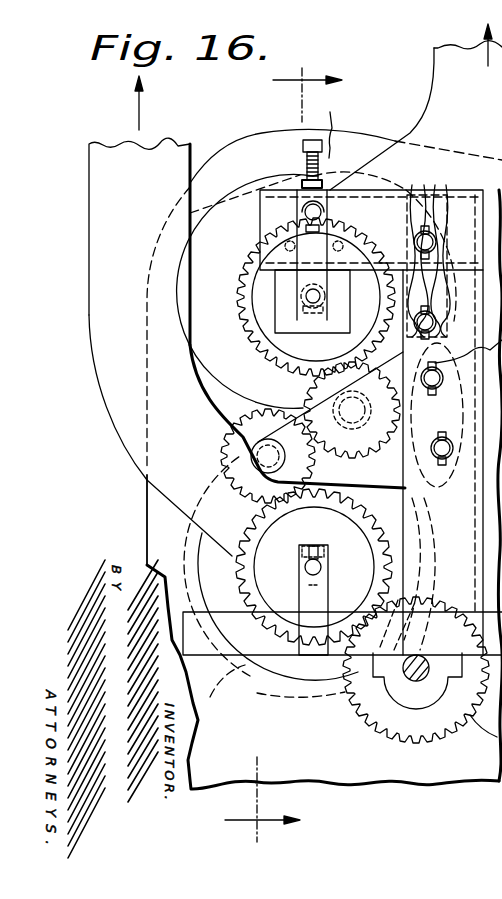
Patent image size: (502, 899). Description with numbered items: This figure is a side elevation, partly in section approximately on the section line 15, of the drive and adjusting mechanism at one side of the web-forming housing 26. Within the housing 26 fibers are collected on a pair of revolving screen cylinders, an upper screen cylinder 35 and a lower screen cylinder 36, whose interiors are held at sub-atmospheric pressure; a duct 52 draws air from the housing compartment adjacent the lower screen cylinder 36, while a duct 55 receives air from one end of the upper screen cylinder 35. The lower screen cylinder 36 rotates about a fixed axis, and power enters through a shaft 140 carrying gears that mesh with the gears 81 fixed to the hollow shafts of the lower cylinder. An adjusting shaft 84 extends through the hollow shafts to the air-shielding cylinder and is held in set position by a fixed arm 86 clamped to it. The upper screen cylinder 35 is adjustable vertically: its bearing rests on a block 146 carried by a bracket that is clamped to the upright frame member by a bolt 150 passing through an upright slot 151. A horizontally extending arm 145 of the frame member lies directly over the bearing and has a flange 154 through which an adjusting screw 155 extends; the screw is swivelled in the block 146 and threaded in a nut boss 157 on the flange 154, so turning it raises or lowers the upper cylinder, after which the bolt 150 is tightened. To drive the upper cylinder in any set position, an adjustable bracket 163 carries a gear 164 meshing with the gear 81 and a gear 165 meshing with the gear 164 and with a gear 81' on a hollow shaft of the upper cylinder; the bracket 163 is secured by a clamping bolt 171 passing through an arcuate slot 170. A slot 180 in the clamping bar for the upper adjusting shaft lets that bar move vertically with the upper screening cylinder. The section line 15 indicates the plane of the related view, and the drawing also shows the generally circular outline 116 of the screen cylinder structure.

The section line 15- 15 is at (277, 457).
The housing 26 is at (147, 486).
The upper screen cylinder 35 is at (186, 206).
The lower screen cylinder 36 is at (342, 663).
The duct 52 is at (105, 148).
The duct 55 is at (434, 48).
The gear 81 is at (255, 568).
The gear 81' is at (187, 348).
The adjusting shaft 84 is at (305, 568).
The fixed arm 86 is at (318, 597).
The cam disc 116 is at (291, 290).
The shaft 140 is at (416, 680).
The horizontally extending arm 145 is at (233, 207).
The block 146 is at (333, 333).
The bolt 150 is at (408, 196).
The upright slot 151 is at (447, 196).
The flange 154 is at (262, 185).
The adjusting screw 155 is at (338, 126).
The nut boss 157 is at (330, 180).
The adjustable bracket 163 is at (352, 494).
The gear 164 is at (227, 460).
The gear 165 is at (305, 383).
The arcuate slot 170 is at (450, 430).
The clamping bolt 171 is at (420, 492).
The slot 180 is at (322, 220).